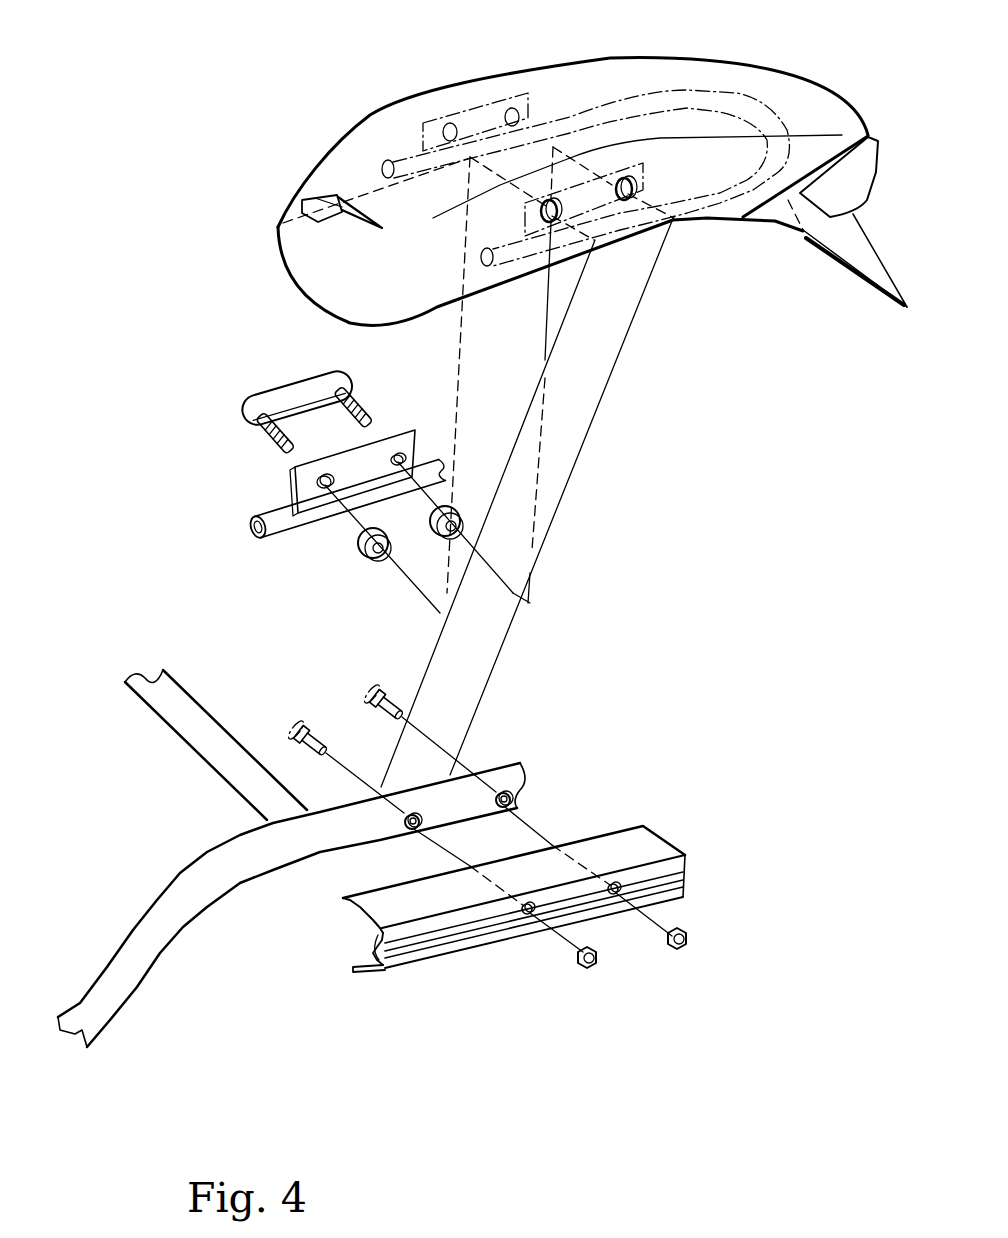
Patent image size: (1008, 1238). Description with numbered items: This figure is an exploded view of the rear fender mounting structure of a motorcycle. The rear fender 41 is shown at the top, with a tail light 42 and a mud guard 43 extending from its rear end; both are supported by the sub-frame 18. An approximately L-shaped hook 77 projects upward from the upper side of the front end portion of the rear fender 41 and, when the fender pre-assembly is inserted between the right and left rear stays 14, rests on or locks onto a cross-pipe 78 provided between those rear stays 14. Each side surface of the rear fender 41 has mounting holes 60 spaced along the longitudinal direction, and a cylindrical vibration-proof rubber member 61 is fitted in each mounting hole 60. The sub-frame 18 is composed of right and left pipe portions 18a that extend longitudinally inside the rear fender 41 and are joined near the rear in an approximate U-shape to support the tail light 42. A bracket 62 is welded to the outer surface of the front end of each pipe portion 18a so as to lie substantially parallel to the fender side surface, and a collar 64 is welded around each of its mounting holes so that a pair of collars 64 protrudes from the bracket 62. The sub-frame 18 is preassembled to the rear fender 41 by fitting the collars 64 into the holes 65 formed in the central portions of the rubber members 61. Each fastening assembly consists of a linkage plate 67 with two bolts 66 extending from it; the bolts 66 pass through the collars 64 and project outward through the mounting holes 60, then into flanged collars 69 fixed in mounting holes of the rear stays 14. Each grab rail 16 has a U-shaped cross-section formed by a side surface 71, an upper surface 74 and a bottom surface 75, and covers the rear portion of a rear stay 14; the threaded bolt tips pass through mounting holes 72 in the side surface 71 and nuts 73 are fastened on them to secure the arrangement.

The rear fender 41 is at (637, 67).
The tail light 42 is at (870, 173).
The mud guard 43 is at (880, 267).
The hook 77 is at (327, 203).
The sub-frame 18 is at (715, 203).
The pipe portion 18a is at (262, 515).
The mounting hole 60 is at (548, 223).
The linkage plate 67 is at (307, 396).
The bolt 66 is at (365, 418).
The collar 64 is at (397, 453).
The bracket 62 is at (357, 460).
The vibration-proof rubber member 61 is at (366, 557).
The hole 65 is at (378, 560).
The flanged collar 69 is at (365, 686).
The cross-pipe 78 is at (187, 745).
The rear stay 14 is at (348, 833).
The upper surface 74 is at (647, 840).
The side surface 71 is at (684, 884).
The mounting hole 72 is at (528, 917).
The nut 73 is at (587, 970).
The bottom surface 75 is at (370, 975).
The grab rail 16 is at (533, 918).